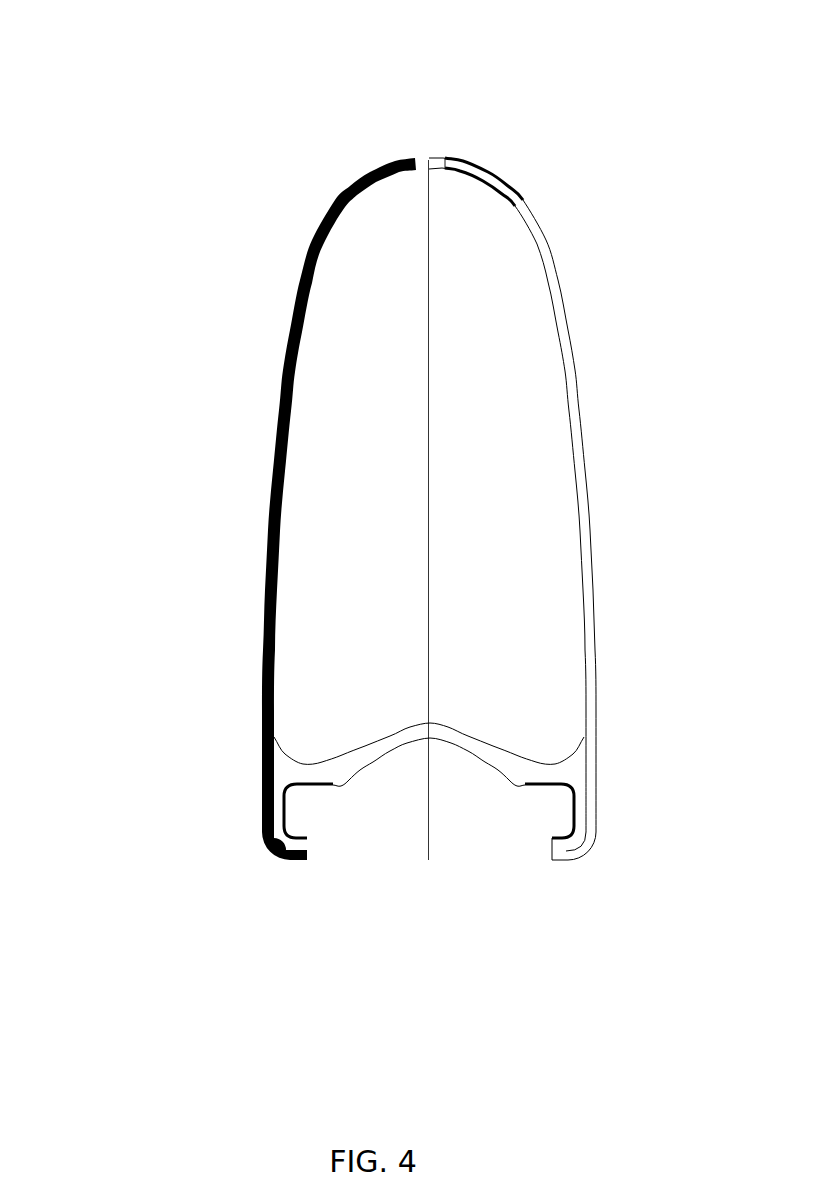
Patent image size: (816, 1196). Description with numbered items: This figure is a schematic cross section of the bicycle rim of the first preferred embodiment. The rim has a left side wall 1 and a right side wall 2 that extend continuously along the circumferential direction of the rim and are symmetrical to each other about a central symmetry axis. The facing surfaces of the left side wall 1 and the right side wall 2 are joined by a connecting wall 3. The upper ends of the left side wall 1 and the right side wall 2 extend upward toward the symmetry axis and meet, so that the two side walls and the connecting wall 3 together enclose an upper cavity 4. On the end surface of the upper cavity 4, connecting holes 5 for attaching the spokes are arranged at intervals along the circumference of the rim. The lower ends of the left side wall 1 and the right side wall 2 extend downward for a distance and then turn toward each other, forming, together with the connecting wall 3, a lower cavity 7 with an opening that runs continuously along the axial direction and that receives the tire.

The left side wall 1 is at (268, 495).
The right side wall 2 is at (573, 390).
The connecting wall 3 is at (468, 737).
The upper cavity 4 is at (412, 340).
The connecting hole 5 is at (421, 165).
The lower cavity 7 is at (347, 816).